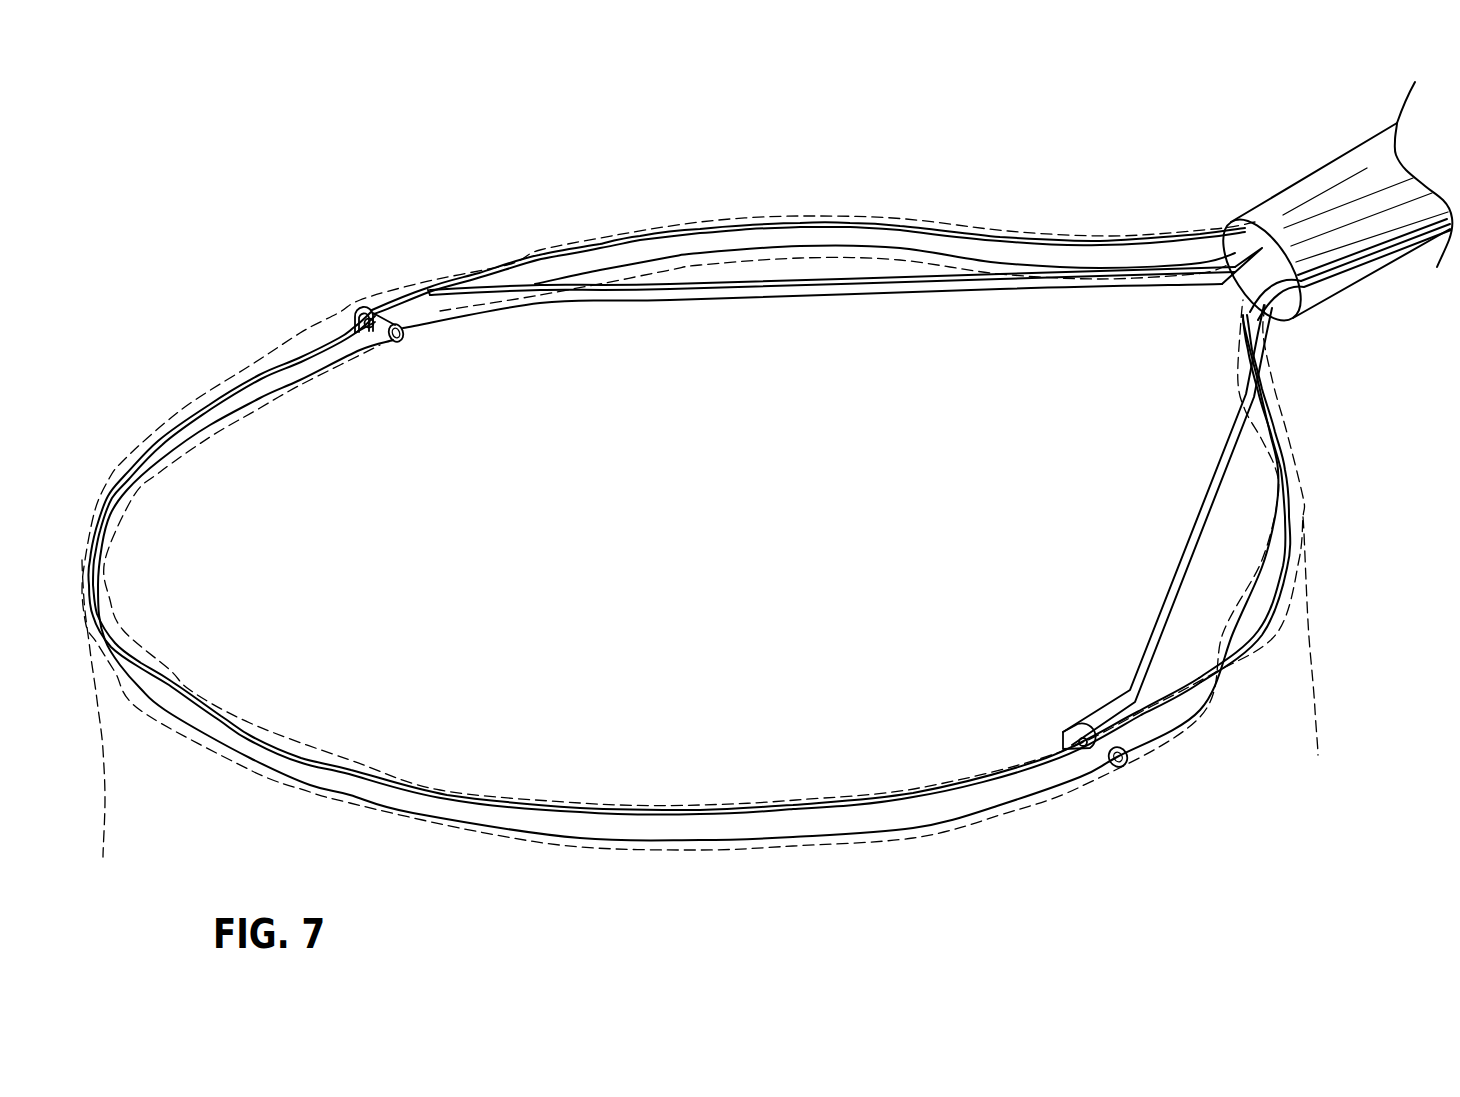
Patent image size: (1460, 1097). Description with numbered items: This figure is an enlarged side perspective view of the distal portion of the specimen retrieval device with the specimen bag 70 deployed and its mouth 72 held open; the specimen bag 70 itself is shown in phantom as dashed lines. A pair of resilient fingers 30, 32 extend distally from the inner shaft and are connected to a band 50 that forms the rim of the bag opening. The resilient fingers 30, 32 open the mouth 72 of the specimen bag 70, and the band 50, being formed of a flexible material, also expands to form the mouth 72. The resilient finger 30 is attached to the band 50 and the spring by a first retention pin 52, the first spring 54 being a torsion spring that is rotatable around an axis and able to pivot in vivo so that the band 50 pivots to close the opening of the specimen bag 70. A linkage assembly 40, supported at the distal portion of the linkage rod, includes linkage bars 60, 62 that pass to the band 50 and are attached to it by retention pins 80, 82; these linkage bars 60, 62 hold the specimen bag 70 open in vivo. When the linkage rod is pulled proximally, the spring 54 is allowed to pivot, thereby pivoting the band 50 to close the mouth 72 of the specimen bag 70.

The resilient finger 30 is at (888, 234).
The resilient finger 32 is at (1285, 574).
The linkage assembly 40 is at (406, 283).
The band 50 is at (255, 383).
The first retention pin 52 is at (408, 337).
The first spring 54 is at (1120, 767).
The linkage bar 60 is at (985, 289).
The linkage bar 62 is at (1213, 478).
The specimen bag 70 is at (1297, 460).
The mouth 72 is at (797, 802).
The retention pin 80 is at (370, 330).
The retention pin 82 is at (1084, 752).